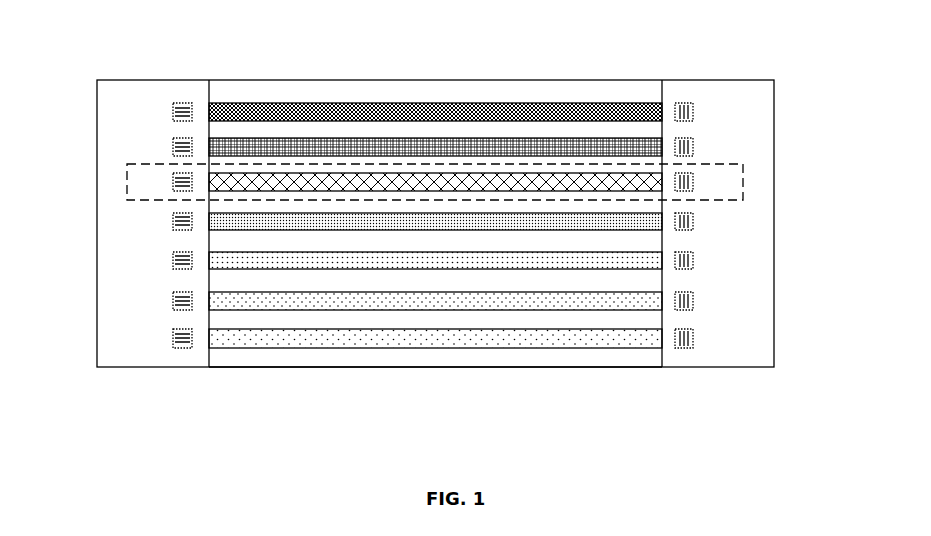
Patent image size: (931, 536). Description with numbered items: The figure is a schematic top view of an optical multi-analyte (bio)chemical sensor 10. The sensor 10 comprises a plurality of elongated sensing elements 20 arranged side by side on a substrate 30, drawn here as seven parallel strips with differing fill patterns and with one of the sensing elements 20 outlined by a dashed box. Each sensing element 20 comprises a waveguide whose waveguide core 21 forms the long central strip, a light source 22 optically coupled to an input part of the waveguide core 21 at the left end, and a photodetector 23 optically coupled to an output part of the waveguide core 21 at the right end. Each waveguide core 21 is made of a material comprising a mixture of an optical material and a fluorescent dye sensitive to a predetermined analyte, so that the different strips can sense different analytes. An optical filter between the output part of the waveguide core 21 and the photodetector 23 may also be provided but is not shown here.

The optical multi-analyte (bio)chemical sensor 10 is at (157, 60).
The elongated sensing element 20 is at (745, 183).
The waveguide core 21 is at (399, 177).
The light source 22 is at (172, 113).
The photodetector 23 is at (685, 226).
The substrate 30 is at (330, 366).